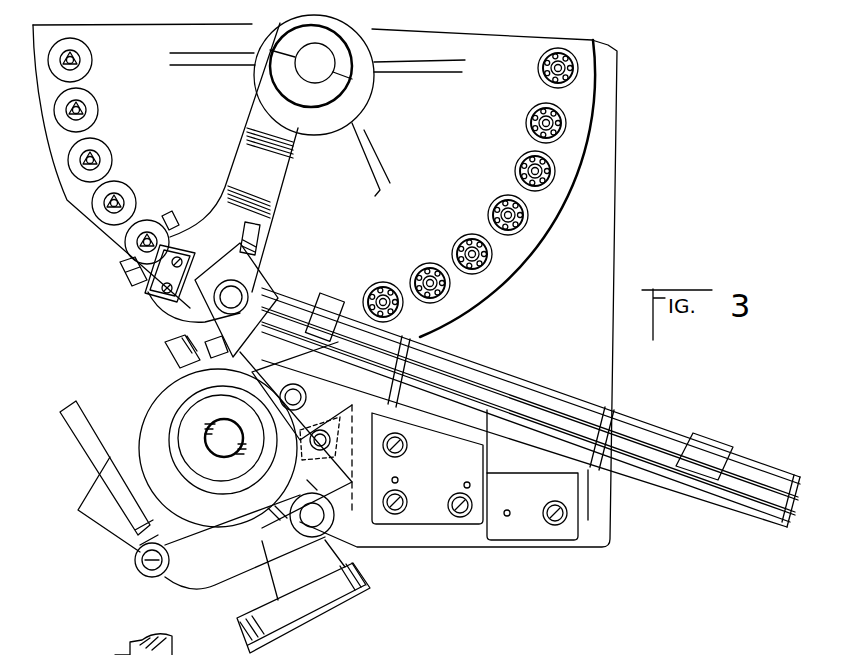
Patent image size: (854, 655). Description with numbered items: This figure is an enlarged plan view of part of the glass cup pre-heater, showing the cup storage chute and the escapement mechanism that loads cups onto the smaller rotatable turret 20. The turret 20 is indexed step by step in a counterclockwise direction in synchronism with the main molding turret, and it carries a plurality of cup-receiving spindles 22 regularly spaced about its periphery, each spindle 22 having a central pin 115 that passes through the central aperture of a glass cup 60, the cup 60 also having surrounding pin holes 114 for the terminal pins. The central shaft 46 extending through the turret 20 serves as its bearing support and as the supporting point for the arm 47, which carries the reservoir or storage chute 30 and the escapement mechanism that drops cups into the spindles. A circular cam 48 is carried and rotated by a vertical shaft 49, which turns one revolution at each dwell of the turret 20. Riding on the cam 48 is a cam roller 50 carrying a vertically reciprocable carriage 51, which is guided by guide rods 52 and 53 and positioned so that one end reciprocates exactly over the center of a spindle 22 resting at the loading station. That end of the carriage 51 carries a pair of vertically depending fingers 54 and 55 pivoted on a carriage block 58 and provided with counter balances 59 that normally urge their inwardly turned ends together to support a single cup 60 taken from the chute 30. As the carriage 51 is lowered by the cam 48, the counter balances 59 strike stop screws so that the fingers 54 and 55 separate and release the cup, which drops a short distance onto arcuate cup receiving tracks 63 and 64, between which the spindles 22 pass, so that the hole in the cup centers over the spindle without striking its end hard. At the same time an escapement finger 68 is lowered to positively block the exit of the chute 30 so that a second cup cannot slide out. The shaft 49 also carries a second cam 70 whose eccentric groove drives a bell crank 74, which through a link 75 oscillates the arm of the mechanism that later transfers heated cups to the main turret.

The rotatable turret 20 is at (546, 250).
The cup-receiving spindle 22 is at (122, 203).
The storage chute 30 is at (500, 368).
The central shaft 46 is at (322, 62).
The arm 47 is at (246, 125).
The circular cam 48 is at (183, 403).
The vertical shaft 49 is at (222, 440).
The cam roller 50 is at (264, 430).
The carriage 51 is at (273, 356).
The guide rod 52 is at (322, 450).
The guide rod 53 is at (306, 397).
The finger 54 is at (212, 332).
The finger 55 is at (247, 260).
The carriage block 58 is at (182, 322).
The counter balance 59 is at (222, 357).
The glass cup 60 is at (438, 238).
The arcuate cup receiving track 63 is at (124, 273).
The arcuate cup receiving track 64 is at (166, 220).
The escapement finger 68 is at (160, 298).
The second cam 70 is at (158, 410).
The bell crank 74 is at (232, 562).
The link 75 is at (96, 455).
The pin hole 114 is at (528, 162).
The central pin 115 is at (80, 106).